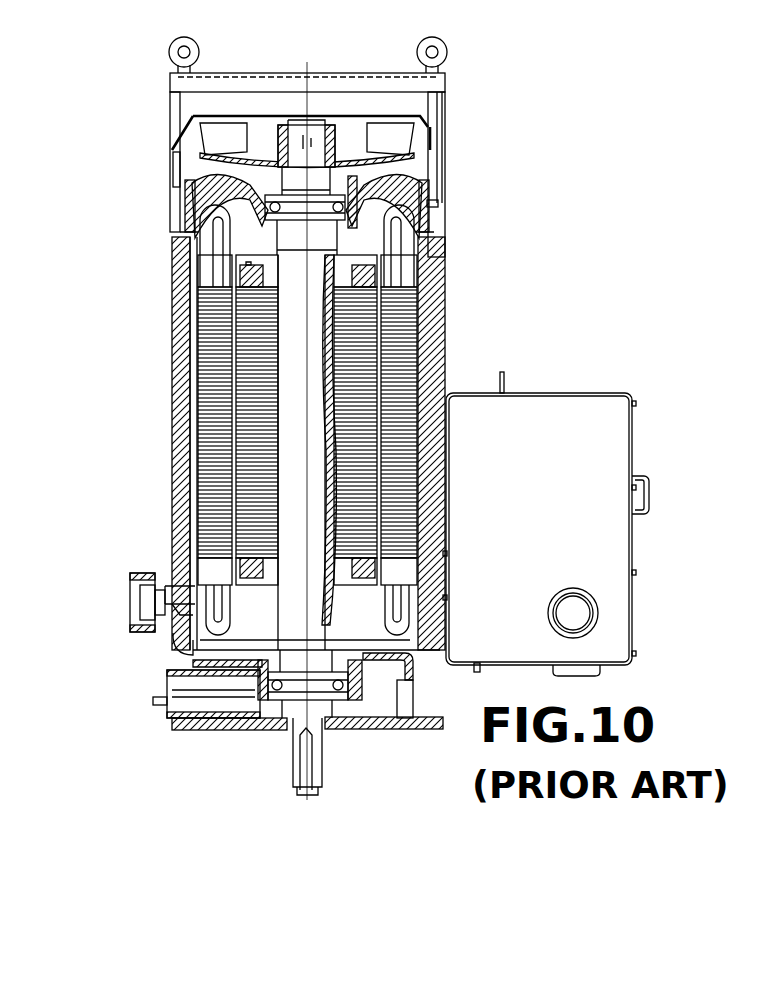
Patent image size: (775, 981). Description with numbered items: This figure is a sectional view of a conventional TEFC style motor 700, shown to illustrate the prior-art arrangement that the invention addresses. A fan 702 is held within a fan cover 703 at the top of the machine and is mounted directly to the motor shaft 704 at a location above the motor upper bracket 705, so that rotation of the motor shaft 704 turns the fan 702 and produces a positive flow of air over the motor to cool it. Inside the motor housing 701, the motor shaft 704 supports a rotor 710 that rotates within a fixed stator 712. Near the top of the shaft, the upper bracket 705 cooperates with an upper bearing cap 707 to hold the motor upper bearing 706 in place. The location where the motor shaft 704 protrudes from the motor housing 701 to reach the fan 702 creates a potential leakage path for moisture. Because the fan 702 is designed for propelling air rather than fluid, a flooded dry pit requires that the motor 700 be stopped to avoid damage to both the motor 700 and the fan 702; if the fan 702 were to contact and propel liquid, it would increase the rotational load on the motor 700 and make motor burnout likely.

The TEFC motor 700 is at (160, 128).
The motor housing 701 is at (173, 465).
The fan 702 is at (229, 137).
The fan cover 703 is at (462, 116).
The motor shaft 704 is at (292, 366).
The motor upper bracket 705 is at (187, 197).
The motor upper bearing 706 is at (345, 210).
The upper bearing cap 707 is at (256, 236).
The rotor 710 is at (236, 417).
The stator 712 is at (210, 344).